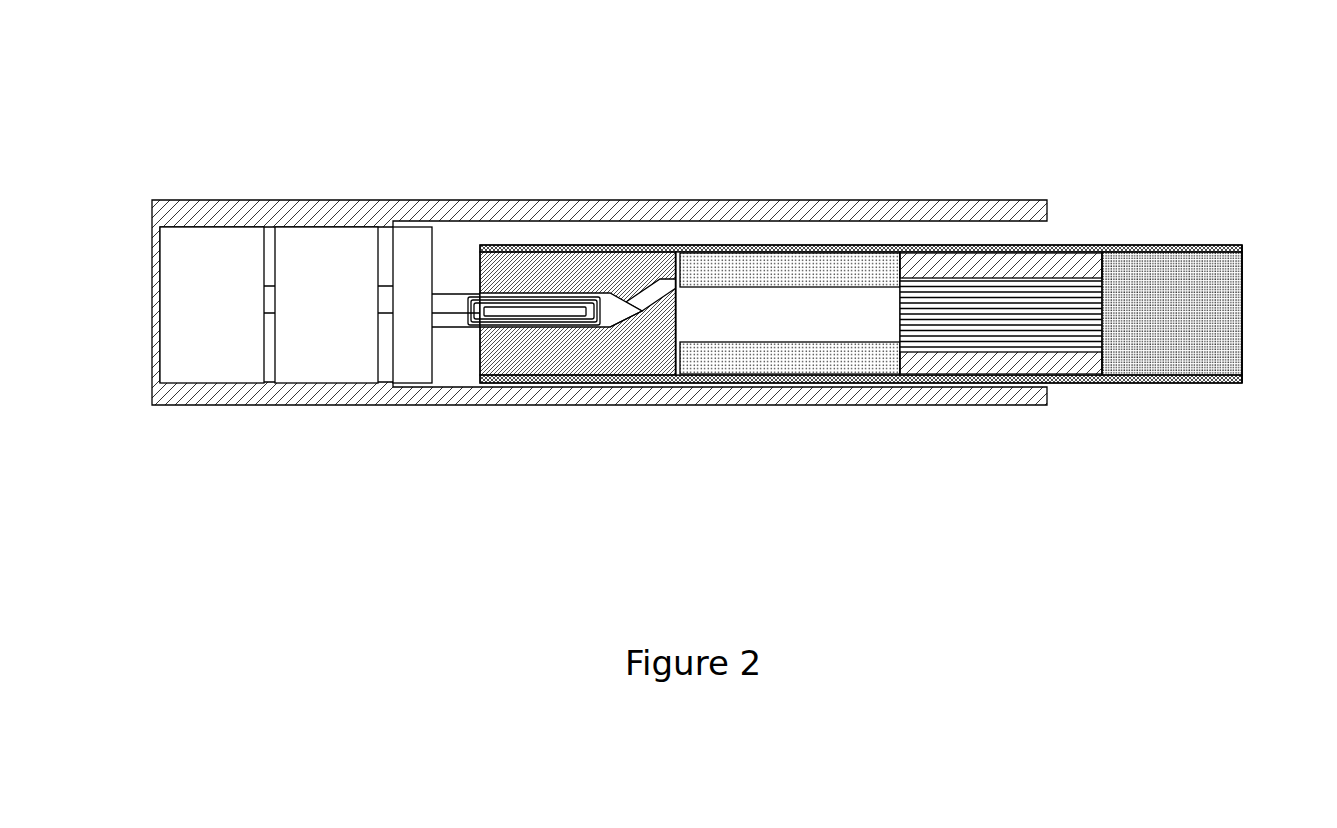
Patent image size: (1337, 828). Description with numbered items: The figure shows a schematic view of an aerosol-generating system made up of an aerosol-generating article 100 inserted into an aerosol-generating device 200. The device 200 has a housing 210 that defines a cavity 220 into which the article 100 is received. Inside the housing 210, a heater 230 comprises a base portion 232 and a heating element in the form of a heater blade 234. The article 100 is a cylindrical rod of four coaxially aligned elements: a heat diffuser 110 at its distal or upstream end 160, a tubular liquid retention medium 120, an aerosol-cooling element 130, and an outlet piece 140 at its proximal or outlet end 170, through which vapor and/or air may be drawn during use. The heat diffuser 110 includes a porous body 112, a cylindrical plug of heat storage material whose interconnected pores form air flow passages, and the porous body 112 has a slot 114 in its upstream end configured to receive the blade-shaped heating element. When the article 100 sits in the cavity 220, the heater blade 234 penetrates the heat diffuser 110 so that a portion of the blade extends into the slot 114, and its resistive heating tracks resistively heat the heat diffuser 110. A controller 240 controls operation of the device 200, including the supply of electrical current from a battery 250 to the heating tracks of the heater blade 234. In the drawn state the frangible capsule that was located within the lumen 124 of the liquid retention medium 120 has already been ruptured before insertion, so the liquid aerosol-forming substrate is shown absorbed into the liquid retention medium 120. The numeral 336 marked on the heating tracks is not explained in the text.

The aerosol-generating article 100 is at (844, 300).
The heat diffuser 110 is at (603, 311).
The porous body 112 is at (527, 360).
The slot 114 is at (655, 305).
The tubular liquid retention medium 120 is at (798, 306).
The lumen 124 is at (847, 293).
The aerosol-cooling element 130 is at (1004, 366).
The outlet piece 140 is at (1161, 364).
The upstream end 160 is at (498, 214).
The outlet end 170 is at (1242, 280).
The aerosol-generating device 200 is at (599, 281).
The housing 210 is at (782, 208).
The cavity 220 is at (950, 228).
The heater 230 is at (619, 322).
The base portion 232 is at (415, 362).
The heater blade 234 is at (610, 318).
The controller 240 is at (328, 305).
The battery 250 is at (212, 305).
The heating coil 336 is at (557, 305).